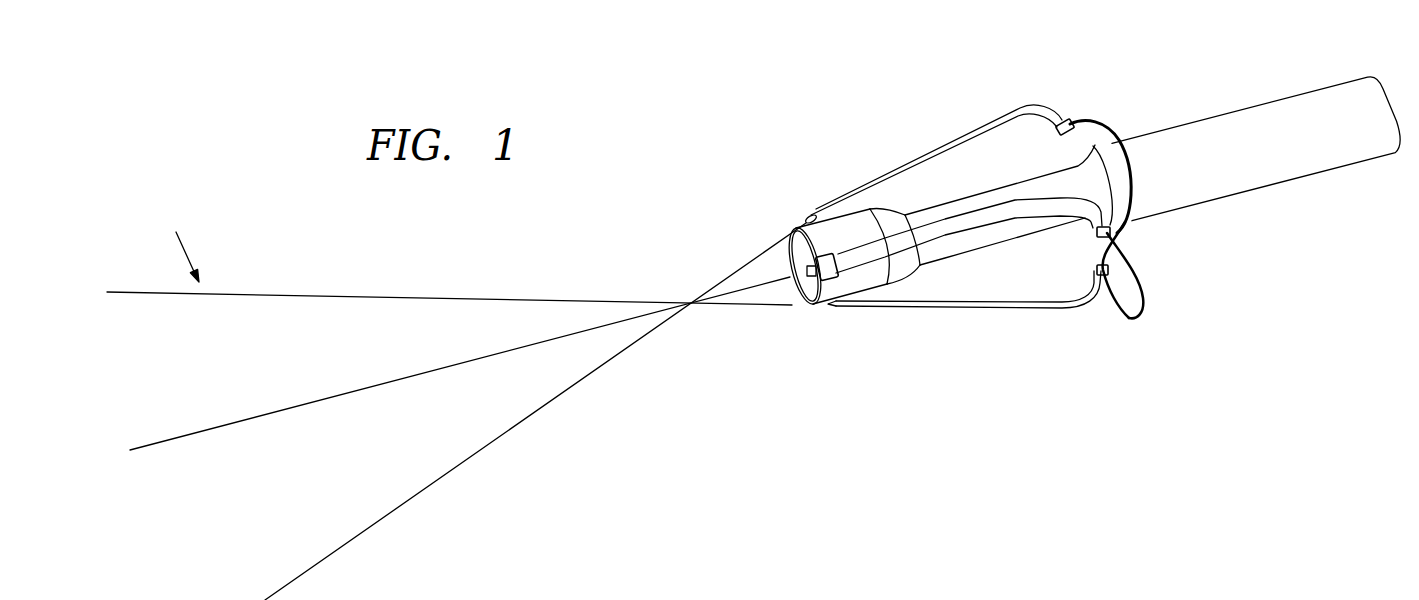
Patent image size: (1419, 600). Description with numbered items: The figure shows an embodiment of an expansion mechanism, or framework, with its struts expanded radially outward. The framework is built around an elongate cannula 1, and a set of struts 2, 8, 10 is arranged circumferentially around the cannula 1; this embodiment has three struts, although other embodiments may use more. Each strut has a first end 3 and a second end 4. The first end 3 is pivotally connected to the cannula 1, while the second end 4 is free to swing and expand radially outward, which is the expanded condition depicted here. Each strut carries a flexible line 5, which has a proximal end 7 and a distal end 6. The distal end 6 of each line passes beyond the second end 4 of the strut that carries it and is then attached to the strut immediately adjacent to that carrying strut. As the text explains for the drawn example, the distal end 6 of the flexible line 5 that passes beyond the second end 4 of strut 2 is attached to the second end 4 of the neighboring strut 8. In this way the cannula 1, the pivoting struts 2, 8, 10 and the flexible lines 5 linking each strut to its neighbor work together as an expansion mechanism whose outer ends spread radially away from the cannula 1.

The elongate cannula 1 is at (1255, 197).
The strut 2 is at (906, 163).
The first end 3 is at (806, 216).
The second end 4 is at (1066, 120).
The flexible line 5 is at (570, 298).
The distal end 6 is at (1136, 321).
The proximal end 7 is at (178, 241).
The strut 8 is at (1033, 218).
The strut 10 is at (1020, 310).